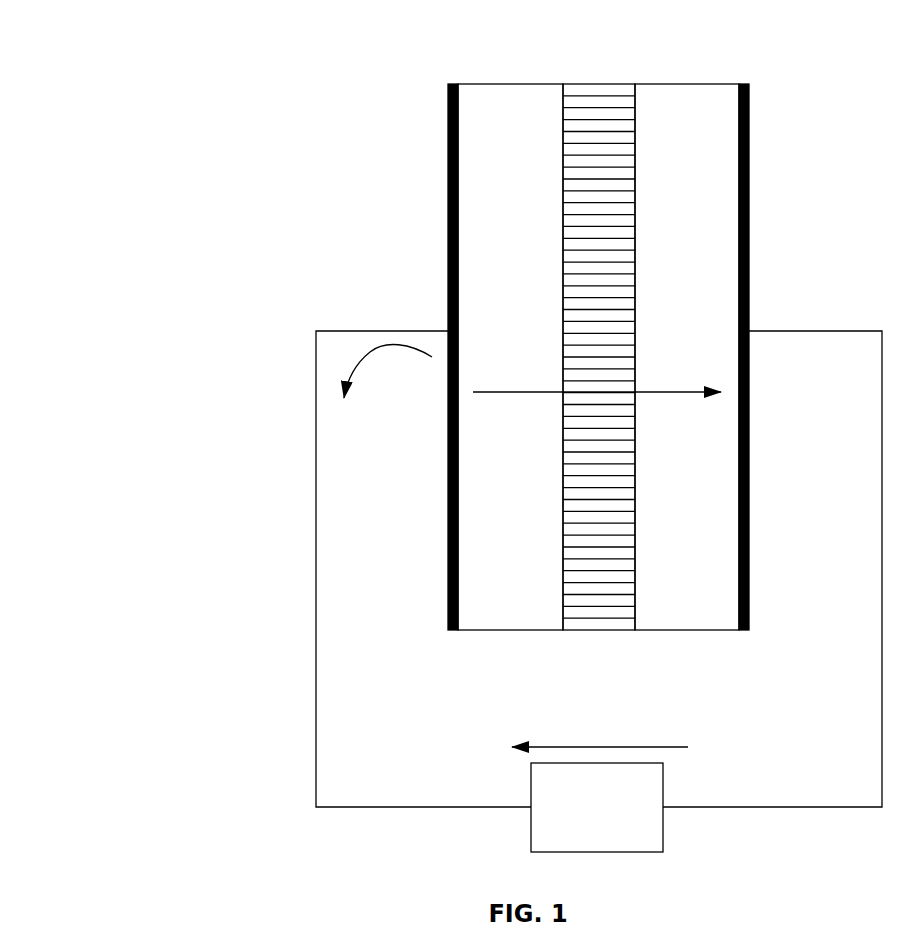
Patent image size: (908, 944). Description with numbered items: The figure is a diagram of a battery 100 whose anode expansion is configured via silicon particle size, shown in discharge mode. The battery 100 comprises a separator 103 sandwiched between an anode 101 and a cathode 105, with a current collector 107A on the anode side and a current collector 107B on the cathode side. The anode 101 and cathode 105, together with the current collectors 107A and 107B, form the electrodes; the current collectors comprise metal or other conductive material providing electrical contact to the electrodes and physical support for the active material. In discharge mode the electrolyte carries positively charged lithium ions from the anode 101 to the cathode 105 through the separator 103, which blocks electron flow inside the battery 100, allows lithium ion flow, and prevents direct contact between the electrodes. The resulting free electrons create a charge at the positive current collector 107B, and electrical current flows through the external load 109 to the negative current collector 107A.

The battery 100 is at (145, 182).
The anode 101 is at (510, 357).
The separator 103 is at (600, 84).
The cathode 105 is at (687, 357).
The negative current collector 107A is at (448, 102).
The positive current collector 107B is at (749, 107).
The load 109 is at (597, 807).